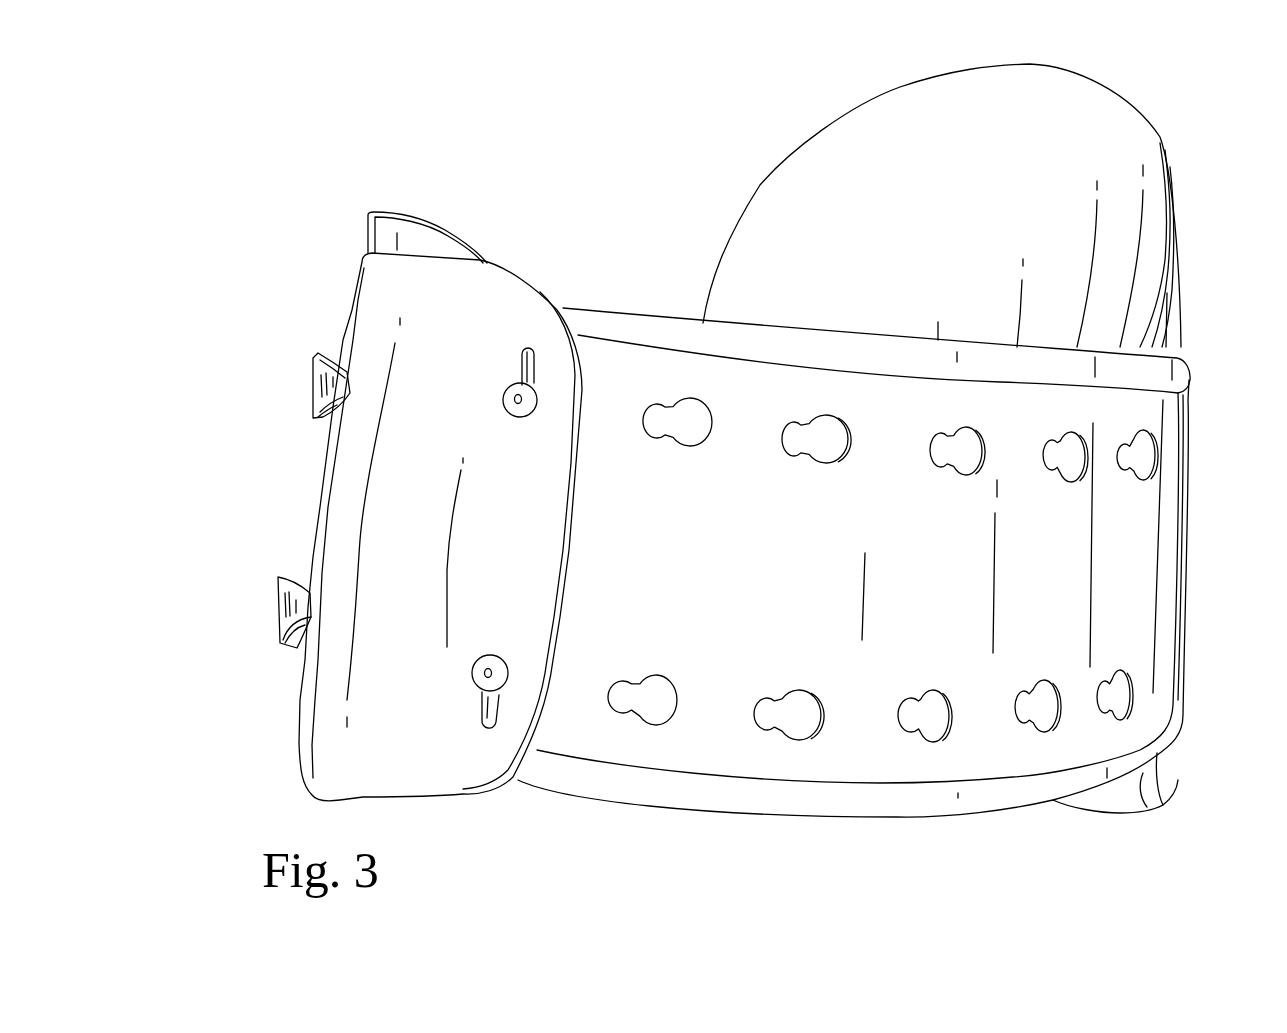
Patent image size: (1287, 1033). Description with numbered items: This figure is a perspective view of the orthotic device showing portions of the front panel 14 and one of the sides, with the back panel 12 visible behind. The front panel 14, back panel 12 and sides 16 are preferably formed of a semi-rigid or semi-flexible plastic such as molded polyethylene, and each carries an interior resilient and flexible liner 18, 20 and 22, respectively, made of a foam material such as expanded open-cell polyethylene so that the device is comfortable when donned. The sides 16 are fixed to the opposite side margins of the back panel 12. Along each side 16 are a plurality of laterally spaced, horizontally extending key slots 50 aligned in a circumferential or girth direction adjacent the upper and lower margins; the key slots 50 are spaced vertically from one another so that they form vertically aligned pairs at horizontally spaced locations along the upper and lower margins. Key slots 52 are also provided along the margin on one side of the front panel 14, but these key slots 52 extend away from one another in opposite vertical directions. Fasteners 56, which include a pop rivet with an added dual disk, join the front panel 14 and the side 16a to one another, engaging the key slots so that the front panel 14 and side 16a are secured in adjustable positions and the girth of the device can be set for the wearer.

The back panel 12 is at (1180, 290).
The front panel 14 is at (392, 318).
The sides 16 is at (860, 768).
The side 16a is at (766, 588).
The liner 18 is at (845, 147).
The liner 20 is at (413, 227).
The liner 22 is at (658, 330).
The key slots 50 is at (687, 427).
The key slots 52 is at (523, 365).
The fasteners 56 is at (506, 398).